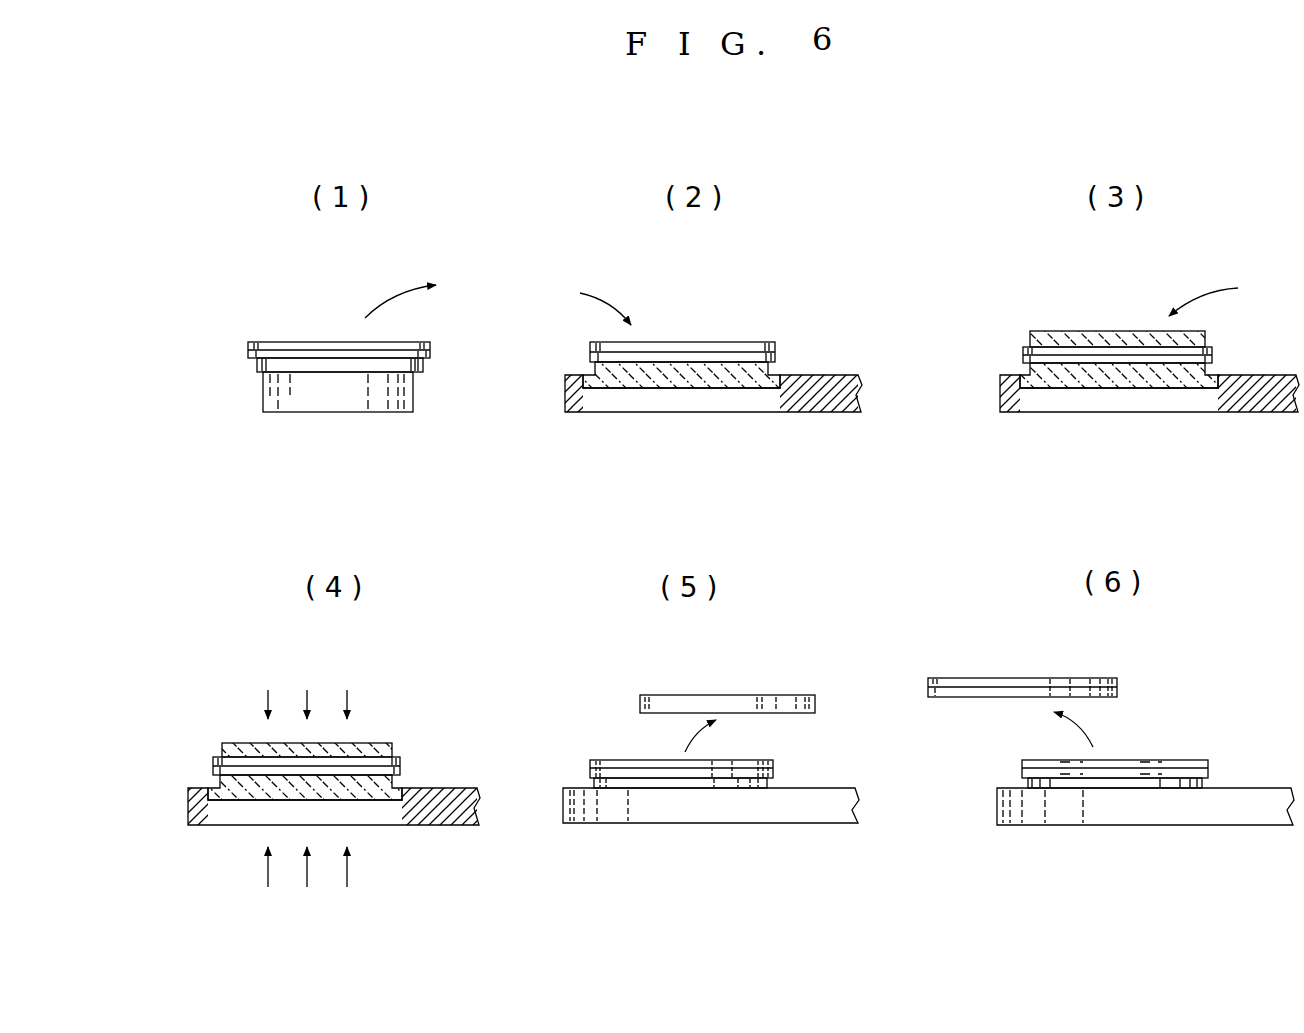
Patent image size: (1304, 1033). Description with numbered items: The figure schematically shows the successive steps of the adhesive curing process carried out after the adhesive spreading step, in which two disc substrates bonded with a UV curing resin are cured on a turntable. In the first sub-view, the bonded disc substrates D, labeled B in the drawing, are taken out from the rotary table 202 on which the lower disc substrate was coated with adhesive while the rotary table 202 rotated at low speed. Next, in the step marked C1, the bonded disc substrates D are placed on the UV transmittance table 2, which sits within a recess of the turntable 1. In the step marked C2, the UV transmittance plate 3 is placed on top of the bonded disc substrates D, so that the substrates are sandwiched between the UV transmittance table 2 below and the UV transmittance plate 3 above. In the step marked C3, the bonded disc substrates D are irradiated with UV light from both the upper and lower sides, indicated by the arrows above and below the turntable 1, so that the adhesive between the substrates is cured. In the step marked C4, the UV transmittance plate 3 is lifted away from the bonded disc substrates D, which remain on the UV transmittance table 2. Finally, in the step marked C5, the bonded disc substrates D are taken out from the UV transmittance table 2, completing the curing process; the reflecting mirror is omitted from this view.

The bonding head assembly B is at (296, 301).
The bonded disc substrates D is at (400, 341).
The rotary table 202 is at (375, 412).
The step 1 (placing film) C1 is at (740, 290).
The UV transmittance table 2 is at (640, 388).
The turntable 1 is at (817, 405).
The step 2 (placing plate) C2 is at (1170, 266).
The UV transmittance plate 3 is at (1075, 330).
The step 3 (pressing) C3 is at (236, 669).
The step 4 (removing plate) C4 is at (616, 684).
The step 5 (removing film) C5 is at (1187, 690).